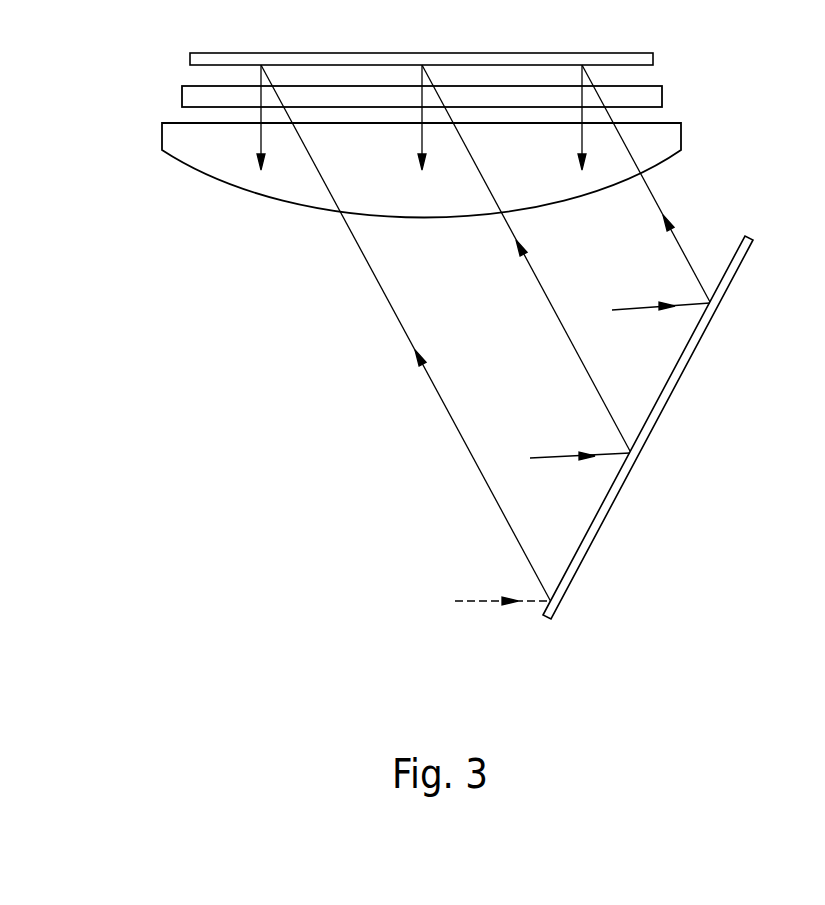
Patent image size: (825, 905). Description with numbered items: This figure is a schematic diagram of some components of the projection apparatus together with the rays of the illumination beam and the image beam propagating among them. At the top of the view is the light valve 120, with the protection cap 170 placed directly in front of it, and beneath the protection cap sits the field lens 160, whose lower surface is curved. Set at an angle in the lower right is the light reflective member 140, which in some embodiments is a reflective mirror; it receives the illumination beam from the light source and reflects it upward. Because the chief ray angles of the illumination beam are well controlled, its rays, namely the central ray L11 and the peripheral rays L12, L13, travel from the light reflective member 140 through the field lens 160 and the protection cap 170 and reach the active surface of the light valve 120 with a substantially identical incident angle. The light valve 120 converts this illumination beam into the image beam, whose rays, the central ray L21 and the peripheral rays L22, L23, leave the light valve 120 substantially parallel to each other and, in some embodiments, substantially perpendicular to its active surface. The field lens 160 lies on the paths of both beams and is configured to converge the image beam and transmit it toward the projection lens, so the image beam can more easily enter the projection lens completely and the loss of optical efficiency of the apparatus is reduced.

The light valve 120 is at (190, 56).
The protection cap 170 is at (182, 94).
The field lens 160 is at (172, 134).
The light reflective member 140 is at (703, 332).
The central ray L11 is at (572, 347).
The peripheral ray L12 is at (493, 495).
The peripheral ray L13 is at (683, 250).
The central ray L21 is at (425, 143).
The peripheral ray L22 is at (257, 142).
The peripheral ray L23 is at (583, 145).